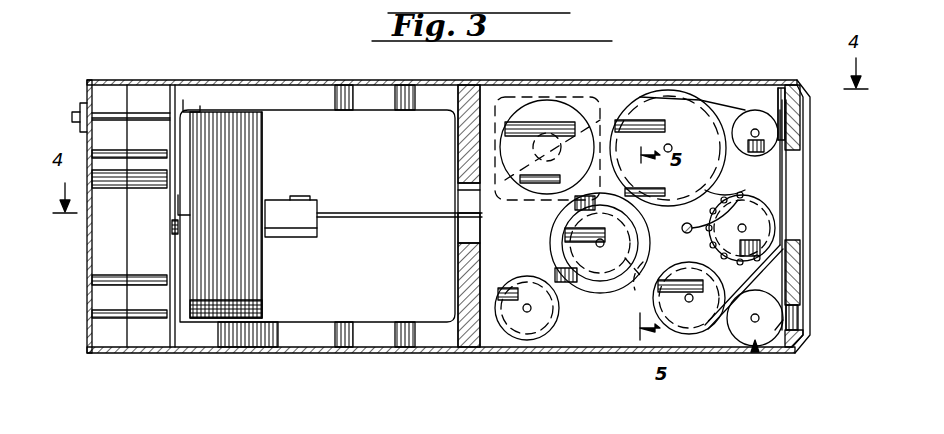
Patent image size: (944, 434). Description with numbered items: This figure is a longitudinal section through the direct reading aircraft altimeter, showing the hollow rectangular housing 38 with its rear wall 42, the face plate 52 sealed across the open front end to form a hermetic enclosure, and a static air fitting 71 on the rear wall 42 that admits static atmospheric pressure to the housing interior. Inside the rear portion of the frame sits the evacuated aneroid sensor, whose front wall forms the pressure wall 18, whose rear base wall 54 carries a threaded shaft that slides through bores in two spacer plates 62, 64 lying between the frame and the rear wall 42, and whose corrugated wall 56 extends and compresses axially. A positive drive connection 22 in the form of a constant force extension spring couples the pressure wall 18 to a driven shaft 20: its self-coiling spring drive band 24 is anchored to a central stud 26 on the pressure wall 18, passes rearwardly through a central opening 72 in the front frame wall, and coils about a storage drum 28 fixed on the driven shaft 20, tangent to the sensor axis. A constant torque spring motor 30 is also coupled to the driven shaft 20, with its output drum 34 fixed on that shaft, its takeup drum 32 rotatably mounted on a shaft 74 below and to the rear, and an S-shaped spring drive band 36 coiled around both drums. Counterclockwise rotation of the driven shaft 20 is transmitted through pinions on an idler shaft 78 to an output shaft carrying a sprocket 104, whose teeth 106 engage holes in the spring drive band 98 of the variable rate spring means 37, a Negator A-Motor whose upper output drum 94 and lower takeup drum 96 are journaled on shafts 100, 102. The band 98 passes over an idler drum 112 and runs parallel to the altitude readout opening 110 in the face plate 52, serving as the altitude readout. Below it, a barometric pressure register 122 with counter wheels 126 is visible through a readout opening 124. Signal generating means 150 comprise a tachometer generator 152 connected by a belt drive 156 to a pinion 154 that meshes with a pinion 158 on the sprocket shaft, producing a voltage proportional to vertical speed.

The pressure wall 18 is at (270, 158).
The driven shaft 20 is at (600, 243).
The positive drive connection 22 is at (382, 216).
The spring drive band 24 is at (418, 213).
The central stud 26 is at (290, 198).
The storage drum 28 is at (604, 290).
The constant torque spring motor 30 is at (523, 335).
The takeup drum 32 is at (538, 330).
The output drum 34 is at (560, 232).
The spring drive band 36 is at (568, 280).
The variable rate spring means 37 is at (740, 100).
The housing 38 is at (358, 80).
The rear wall 42 is at (90, 292).
The plate 52 is at (782, 88).
The rear base wall 54 is at (182, 104).
The corrugated wall 56 is at (232, 118).
The front spacer plate 62 is at (104, 95).
The spacer plate 64 is at (143, 100).
The static air fitting 71 is at (78, 118).
The central opening 72 is at (458, 190).
The shaft 74 is at (525, 308).
The idler shaft 78 is at (740, 200).
The output drum 94 is at (702, 100).
The takeup drum 96 is at (698, 330).
The spring drive band 98 is at (755, 275).
The shaft 100 is at (668, 148).
The shaft 102 is at (689, 300).
The sprocket 104 is at (760, 196).
The teeth 106 is at (748, 185).
The altitude readout opening 110 is at (788, 155).
The idler drum 112 is at (770, 133).
The barometric pressure register 122 is at (760, 320).
The readout opening 124 is at (800, 322).
The counter wheels 126 is at (760, 330).
The signal generating means 150 is at (562, 100).
The tachometer generator 152 is at (515, 110).
The pinion 154 is at (642, 284).
The belt drive 156 is at (462, 232).
The pinion 158 is at (800, 263).